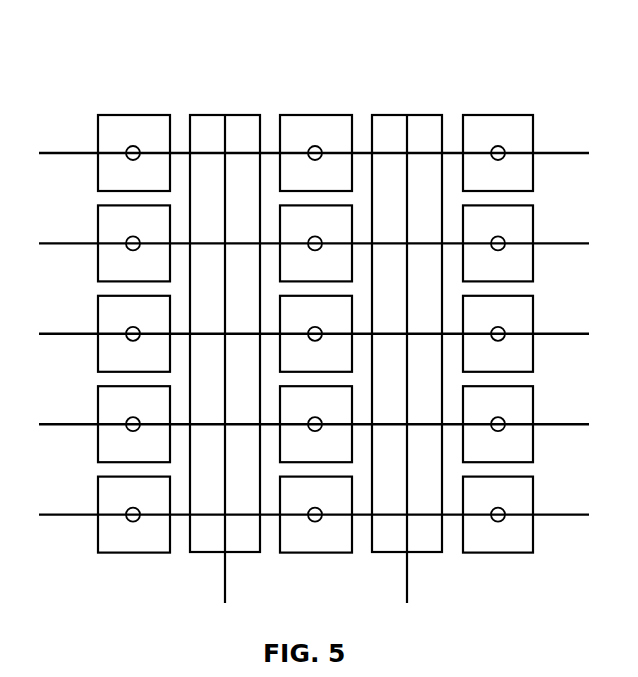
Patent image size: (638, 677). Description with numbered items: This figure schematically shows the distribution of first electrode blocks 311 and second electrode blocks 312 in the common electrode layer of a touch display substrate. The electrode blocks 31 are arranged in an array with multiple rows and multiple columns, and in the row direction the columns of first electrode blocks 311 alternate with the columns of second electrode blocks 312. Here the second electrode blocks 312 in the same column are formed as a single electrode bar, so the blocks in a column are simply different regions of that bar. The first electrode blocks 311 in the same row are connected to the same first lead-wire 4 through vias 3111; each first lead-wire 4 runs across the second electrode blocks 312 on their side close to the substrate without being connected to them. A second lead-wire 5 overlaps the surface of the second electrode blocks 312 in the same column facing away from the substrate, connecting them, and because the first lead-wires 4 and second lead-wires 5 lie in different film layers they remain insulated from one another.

The electrode block 31 is at (307, 75).
The first electrode block 311 is at (135, 114).
The second electrode block 312 is at (238, 115).
The via 3111 is at (128, 148).
The first lead-wire 4 is at (72, 153).
The second lead-wire 5 is at (226, 595).